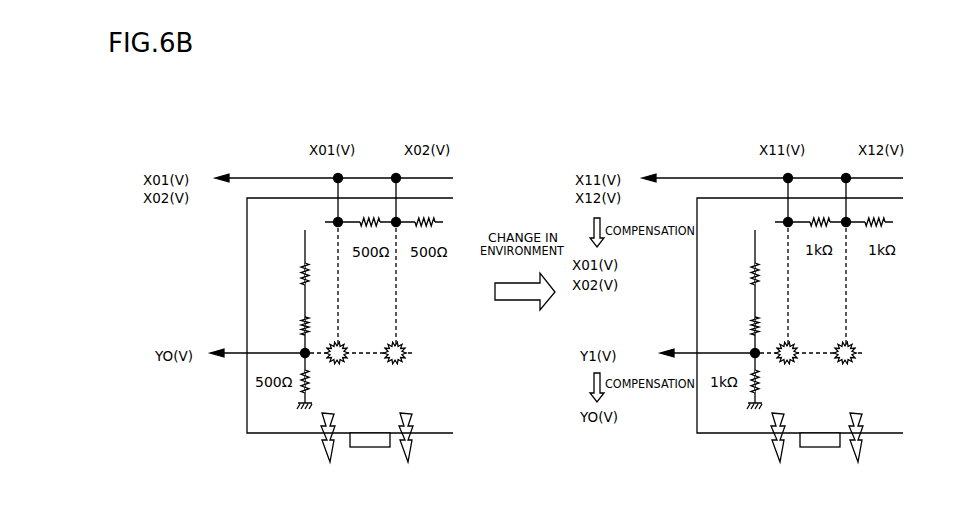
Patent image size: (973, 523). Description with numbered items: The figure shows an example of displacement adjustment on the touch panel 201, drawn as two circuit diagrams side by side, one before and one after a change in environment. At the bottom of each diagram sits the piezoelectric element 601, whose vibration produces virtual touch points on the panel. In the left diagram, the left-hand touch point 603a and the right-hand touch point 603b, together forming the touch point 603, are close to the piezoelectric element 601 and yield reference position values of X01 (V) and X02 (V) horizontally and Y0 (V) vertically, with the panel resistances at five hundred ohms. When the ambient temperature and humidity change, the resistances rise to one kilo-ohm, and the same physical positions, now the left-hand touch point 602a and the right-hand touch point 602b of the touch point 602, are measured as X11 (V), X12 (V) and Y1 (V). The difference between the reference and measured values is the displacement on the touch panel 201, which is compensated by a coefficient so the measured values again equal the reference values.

The touch panel 201 is at (247, 403).
The piezoelectric element 601 is at (368, 447).
The touch point 602 is at (796, 360).
The left-hand touch point 602a is at (790, 362).
The right-hand touch point 602b is at (853, 357).
The touch point 603 is at (346, 360).
The left-hand touch point 603a is at (340, 362).
The right-hand touch point 603b is at (403, 357).